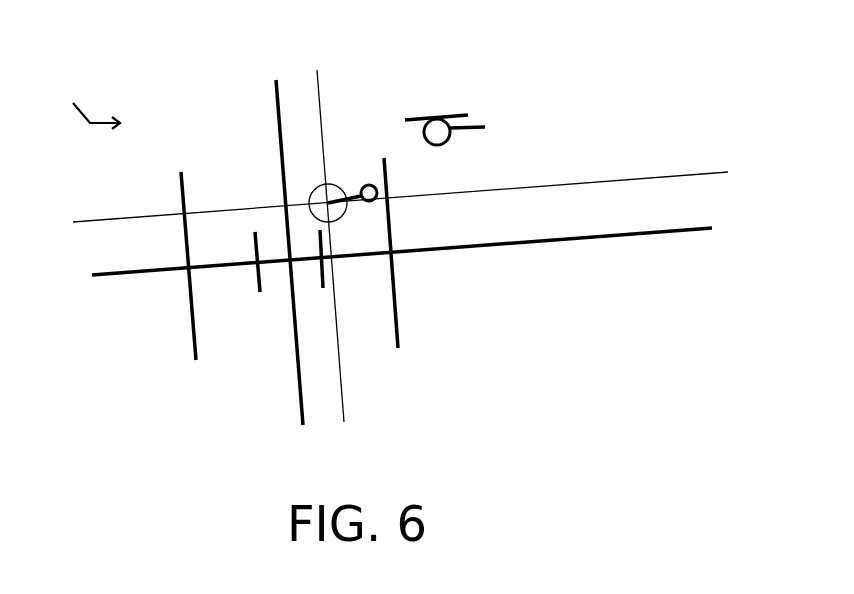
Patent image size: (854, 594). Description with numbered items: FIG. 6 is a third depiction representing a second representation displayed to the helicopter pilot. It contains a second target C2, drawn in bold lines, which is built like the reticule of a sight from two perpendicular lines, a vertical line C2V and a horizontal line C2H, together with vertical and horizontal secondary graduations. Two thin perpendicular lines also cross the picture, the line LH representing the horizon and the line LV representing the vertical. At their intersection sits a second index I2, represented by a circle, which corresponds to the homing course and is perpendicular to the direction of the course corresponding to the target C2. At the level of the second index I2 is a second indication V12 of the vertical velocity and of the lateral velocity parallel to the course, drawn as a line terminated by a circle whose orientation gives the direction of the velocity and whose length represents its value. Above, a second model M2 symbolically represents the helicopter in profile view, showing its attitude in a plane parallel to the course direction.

The second target C2 is at (90, 106).
The vertical line of the second target C2V is at (278, 127).
The vertical line LV is at (318, 73).
The horizon line LH is at (557, 182).
The horizontal line of the second target C2H is at (512, 245).
The second model M2 is at (452, 112).
The second index I2 is at (338, 183).
The second indication of vertical and lateral velocity V12 is at (369, 202).